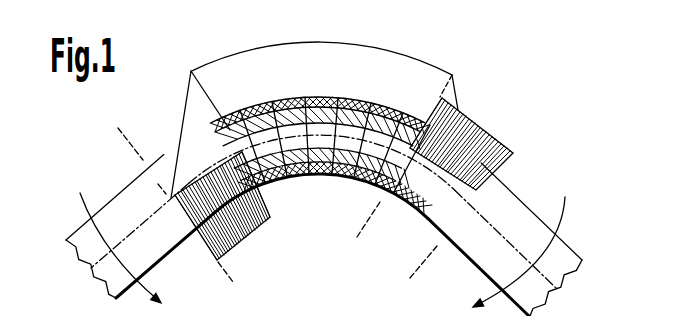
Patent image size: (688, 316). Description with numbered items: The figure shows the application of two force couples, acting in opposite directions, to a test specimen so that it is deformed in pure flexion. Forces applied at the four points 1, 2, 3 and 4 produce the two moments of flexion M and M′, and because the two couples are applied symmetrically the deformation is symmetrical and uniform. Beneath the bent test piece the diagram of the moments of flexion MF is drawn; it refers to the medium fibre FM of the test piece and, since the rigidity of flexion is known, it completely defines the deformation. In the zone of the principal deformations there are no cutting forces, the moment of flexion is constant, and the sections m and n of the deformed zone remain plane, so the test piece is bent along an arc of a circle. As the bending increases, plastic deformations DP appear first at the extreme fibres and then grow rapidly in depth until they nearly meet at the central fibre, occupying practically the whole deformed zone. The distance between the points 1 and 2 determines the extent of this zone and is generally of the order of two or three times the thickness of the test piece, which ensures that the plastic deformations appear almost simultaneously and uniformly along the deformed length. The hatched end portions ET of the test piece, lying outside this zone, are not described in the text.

The point of application of force 1 is at (260, 190).
The point of application of force 2 is at (384, 202).
The point of application of force 3 is at (147, 160).
The point of application of force 4 is at (502, 179).
The moment of flexion M is at (140, 229).
The moment of flexion M' is at (517, 239).
The diagram of the moments of flexion MF is at (274, 48).
The medium fibre FM is at (265, 138).
The plastic deformations DP is at (334, 96).
The end piece ET is at (487, 128).
The plane section m is at (317, 117).
The plane section n is at (321, 170).